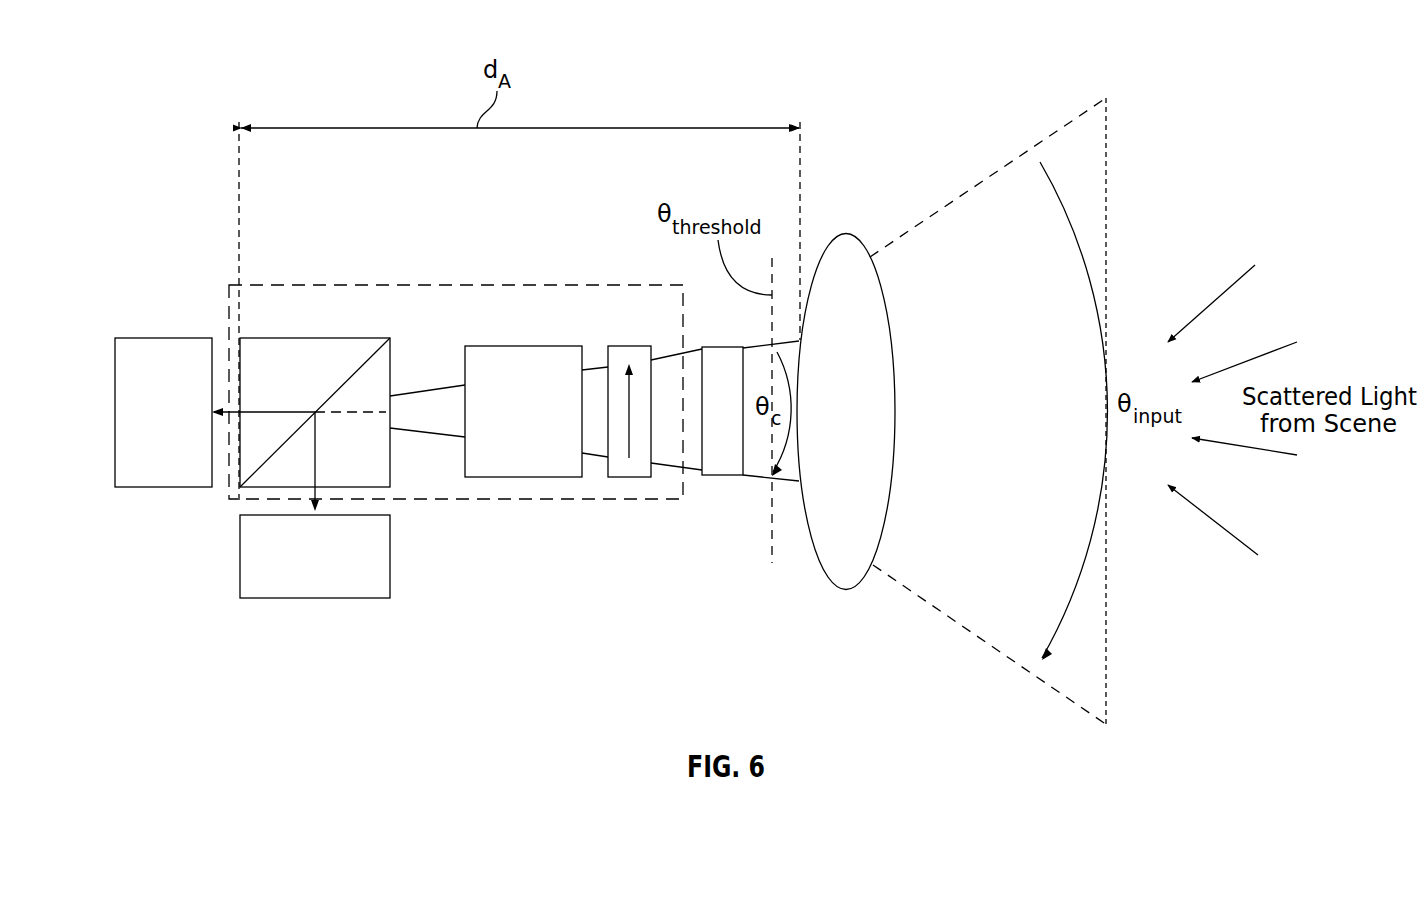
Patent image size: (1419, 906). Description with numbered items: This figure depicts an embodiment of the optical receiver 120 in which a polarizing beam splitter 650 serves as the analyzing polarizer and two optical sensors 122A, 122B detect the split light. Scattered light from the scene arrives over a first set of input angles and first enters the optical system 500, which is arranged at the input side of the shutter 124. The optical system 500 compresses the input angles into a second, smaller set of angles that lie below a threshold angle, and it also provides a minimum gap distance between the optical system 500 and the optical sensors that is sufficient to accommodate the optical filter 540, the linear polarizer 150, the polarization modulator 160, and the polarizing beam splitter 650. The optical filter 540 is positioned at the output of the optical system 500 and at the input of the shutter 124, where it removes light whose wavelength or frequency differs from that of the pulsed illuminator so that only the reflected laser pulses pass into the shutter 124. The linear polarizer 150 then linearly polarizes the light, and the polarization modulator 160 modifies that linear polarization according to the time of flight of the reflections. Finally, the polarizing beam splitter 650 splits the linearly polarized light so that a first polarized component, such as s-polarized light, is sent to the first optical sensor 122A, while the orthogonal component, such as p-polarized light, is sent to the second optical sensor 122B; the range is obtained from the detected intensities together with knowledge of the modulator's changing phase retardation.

The optical receiver 120 is at (951, 74).
The first optical sensor 122A is at (312, 600).
The second optical sensor 122B is at (163, 337).
The shutter 124 is at (542, 503).
The linear polarizer 150 is at (612, 346).
The polarization modulator 160 is at (482, 346).
The optical system 500 is at (845, 233).
The optical filter 540 is at (715, 479).
The polarizing beam splitter 650 is at (305, 338).